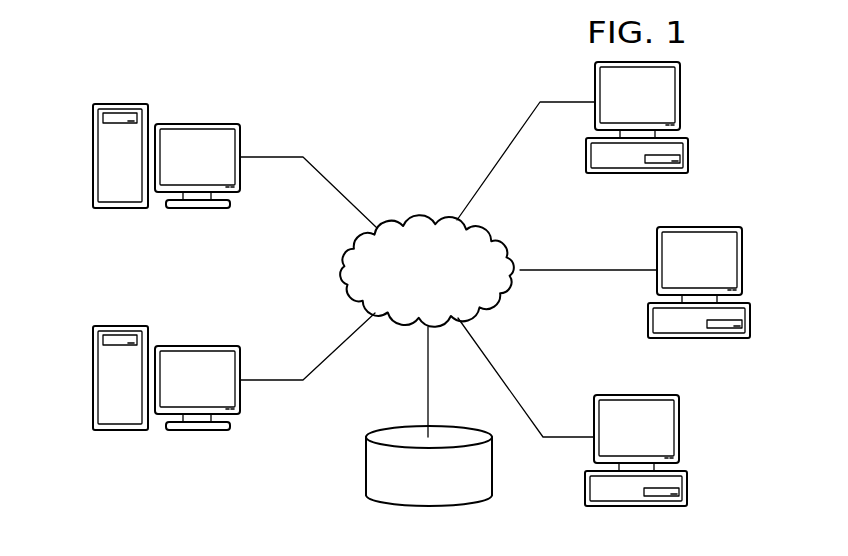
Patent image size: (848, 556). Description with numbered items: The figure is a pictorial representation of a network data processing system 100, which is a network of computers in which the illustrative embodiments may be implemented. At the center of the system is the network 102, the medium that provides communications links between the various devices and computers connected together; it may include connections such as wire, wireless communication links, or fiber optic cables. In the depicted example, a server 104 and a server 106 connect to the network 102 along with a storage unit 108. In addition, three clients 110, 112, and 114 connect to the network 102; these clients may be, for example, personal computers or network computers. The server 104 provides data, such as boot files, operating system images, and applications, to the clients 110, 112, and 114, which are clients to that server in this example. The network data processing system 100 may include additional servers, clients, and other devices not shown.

The network data processing system 100 is at (300, 66).
The network 102 is at (422, 216).
The server 104 is at (93, 155).
The server 106 is at (93, 378).
The storage unit 108 is at (366, 468).
The client 110 is at (688, 158).
The client 112 is at (752, 322).
The client 114 is at (689, 489).